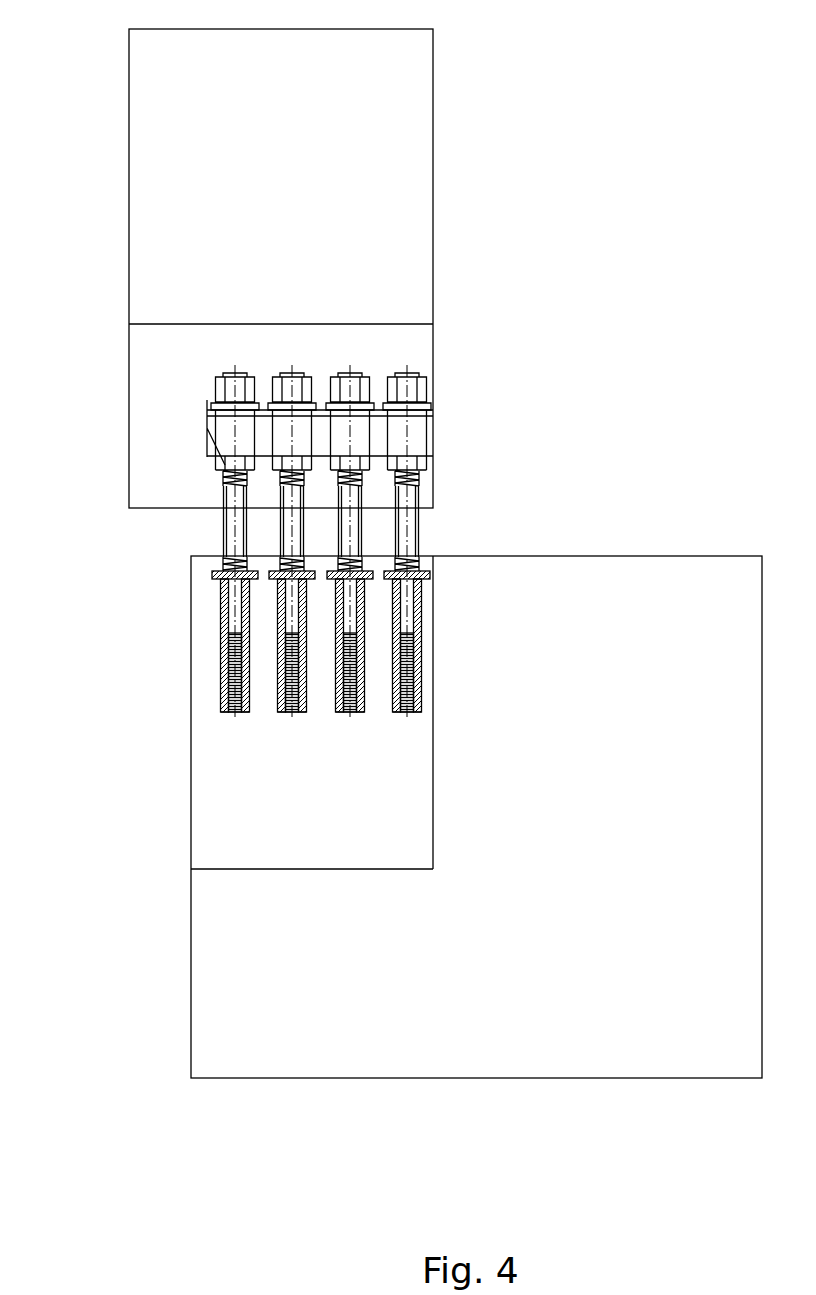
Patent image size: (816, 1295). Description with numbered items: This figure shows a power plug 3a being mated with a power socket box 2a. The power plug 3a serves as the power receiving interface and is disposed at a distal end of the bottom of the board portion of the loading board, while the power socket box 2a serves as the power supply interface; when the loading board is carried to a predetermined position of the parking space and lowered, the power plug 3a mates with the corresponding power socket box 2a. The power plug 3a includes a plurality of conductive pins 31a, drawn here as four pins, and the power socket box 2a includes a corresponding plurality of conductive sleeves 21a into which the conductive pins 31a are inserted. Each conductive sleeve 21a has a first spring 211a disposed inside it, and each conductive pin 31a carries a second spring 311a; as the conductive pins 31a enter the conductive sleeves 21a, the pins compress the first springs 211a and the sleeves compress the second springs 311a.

The power plug 3a is at (383, 345).
The conductive pins 31a is at (413, 495).
The second spring 311a is at (422, 558).
The power socket box 2a is at (302, 888).
The conductive sleeves 21a is at (222, 593).
The first spring 211a is at (222, 658).